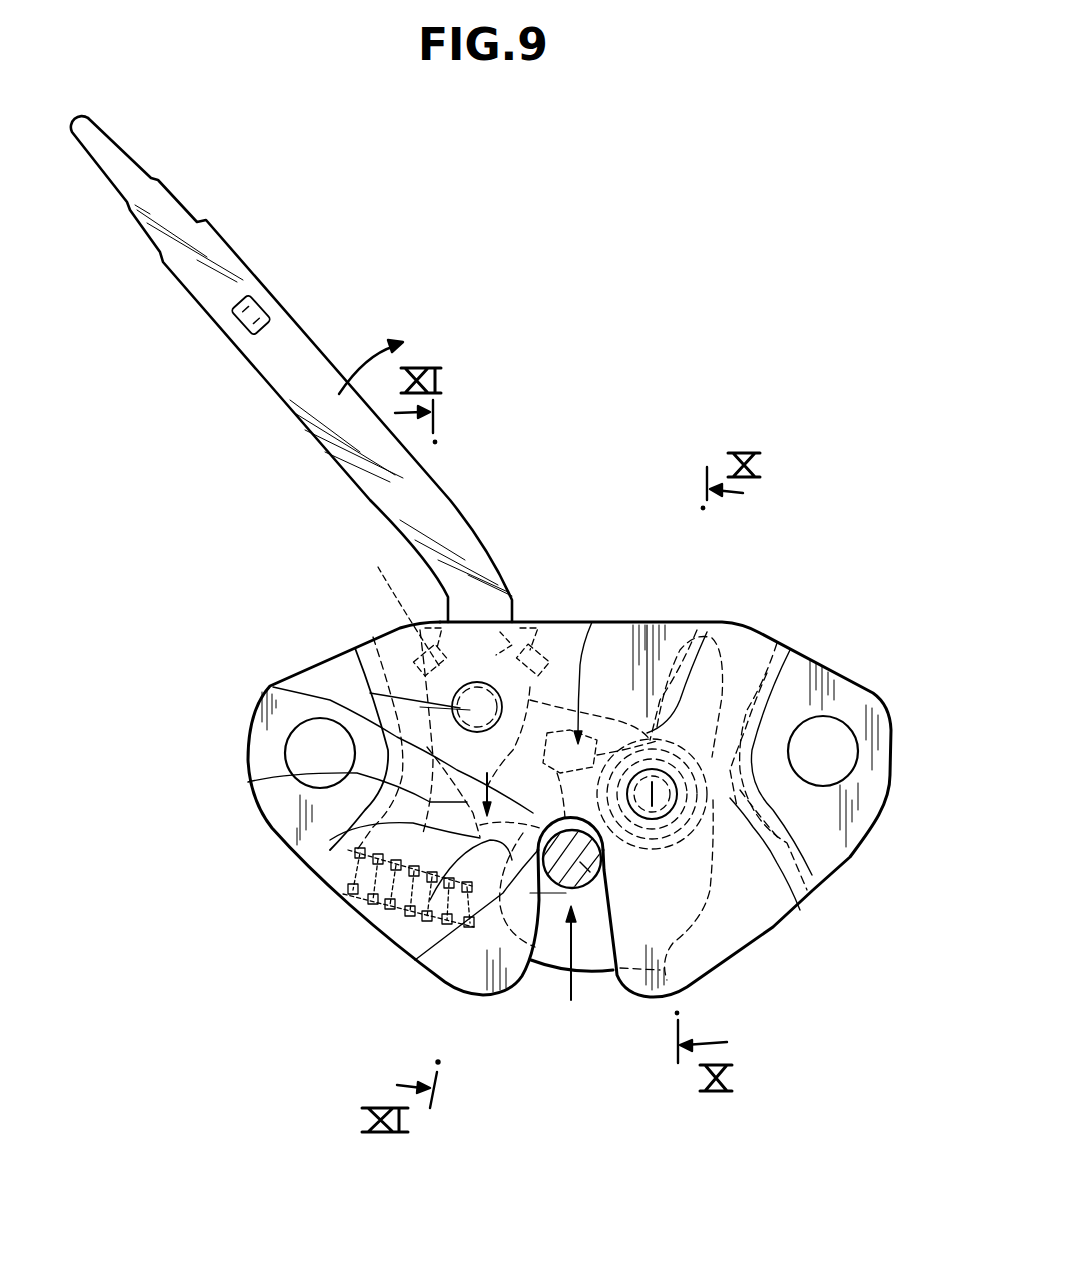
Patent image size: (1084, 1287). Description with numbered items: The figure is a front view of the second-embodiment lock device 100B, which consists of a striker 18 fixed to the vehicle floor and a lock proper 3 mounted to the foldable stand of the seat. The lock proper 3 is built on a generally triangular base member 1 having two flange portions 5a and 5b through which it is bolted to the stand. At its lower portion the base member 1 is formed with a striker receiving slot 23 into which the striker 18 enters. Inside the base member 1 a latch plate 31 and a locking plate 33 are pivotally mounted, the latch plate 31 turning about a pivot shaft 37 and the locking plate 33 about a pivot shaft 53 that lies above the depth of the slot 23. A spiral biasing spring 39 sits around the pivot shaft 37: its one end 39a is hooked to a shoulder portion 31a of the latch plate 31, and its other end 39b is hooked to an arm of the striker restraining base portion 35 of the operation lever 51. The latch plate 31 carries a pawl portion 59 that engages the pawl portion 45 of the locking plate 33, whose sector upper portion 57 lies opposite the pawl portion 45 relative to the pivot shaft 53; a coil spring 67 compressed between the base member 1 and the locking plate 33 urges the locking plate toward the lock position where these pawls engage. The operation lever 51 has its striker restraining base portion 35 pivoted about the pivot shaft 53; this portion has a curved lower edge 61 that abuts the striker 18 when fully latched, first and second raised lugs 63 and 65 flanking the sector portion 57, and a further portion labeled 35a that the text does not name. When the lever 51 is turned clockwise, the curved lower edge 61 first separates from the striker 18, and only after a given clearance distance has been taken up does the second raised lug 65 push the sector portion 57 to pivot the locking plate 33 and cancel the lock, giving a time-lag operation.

The lock device 100B is at (622, 458).
The operation lever 51 is at (253, 270).
The lock proper 3 is at (782, 628).
The flange portion 5a is at (273, 820).
The flange portion 5b is at (858, 823).
The pivot shaft 53 is at (353, 663).
The second raised lug 65 is at (415, 647).
The first raised lug 63 is at (543, 647).
The sector upper portion 57 is at (495, 640).
The pawl portion 59 is at (275, 688).
The striker restraining base portion 35 is at (248, 782).
The locking plate 33 is at (370, 820).
The coil spring 67 is at (415, 957).
The curved lower edge 61 is at (473, 920).
The pawl portion 45 is at (400, 912).
The striker receiving slot 23 is at (547, 967).
The latch plate 31 is at (602, 973).
The striker 18 is at (585, 867).
The pivot shaft 37 is at (655, 800).
The biasing spring 39 is at (676, 741).
The one end of spring 39a is at (805, 913).
The shoulder portion 31a is at (835, 874).
The other end of spring 39b is at (602, 720).
The pawl engaging portion 35a is at (590, 717).
The base member 1 is at (730, 927).